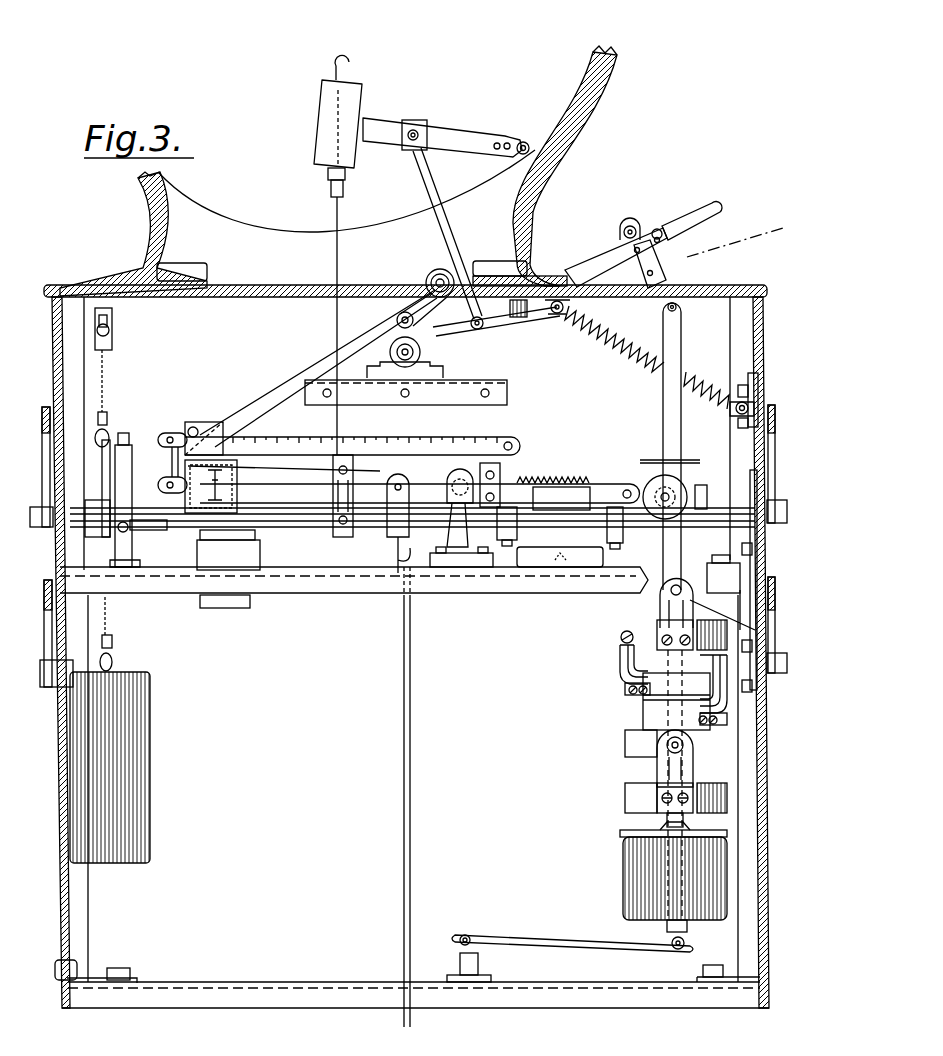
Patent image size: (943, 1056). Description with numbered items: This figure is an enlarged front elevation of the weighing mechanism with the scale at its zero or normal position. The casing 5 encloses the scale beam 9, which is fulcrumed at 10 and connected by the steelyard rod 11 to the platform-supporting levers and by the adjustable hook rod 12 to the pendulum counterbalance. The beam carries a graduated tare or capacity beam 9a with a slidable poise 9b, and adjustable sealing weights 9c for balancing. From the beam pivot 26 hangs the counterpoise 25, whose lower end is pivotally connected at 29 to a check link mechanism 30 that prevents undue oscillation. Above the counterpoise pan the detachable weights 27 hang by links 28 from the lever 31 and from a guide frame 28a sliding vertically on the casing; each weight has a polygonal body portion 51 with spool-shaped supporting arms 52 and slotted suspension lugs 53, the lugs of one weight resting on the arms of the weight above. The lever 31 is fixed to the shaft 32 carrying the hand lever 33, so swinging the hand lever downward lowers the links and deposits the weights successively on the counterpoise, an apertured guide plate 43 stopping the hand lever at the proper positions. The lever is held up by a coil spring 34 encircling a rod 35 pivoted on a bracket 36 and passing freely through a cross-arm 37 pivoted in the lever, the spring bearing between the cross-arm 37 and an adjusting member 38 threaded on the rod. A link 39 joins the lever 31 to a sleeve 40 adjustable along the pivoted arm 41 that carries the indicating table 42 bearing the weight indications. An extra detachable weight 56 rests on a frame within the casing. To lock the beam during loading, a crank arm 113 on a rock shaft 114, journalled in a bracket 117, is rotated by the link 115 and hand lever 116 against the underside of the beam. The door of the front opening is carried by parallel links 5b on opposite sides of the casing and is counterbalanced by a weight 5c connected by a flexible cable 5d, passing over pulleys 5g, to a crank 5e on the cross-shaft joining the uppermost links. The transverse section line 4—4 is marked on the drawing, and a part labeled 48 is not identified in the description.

The handle / base frame 4 is at (720, 206).
The casing 5 is at (770, 866).
The parallel links 5b is at (768, 445).
The counterbalance weight 5c is at (150, 773).
The flexible cable 5d is at (108, 620).
The crank 5e is at (100, 470).
The pulleys 5g is at (109, 333).
The scale beam 9 is at (522, 468).
The graduated tare or capacity beam 9a is at (250, 437).
The slidable poise 9b is at (190, 422).
The adjustable sealing weight 9c is at (565, 473).
The fulcrum 10 is at (448, 508).
The steelyard rod 11 is at (411, 846).
The adjustable hook rod 12 is at (338, 226).
The hanging counterpoise 25 is at (628, 858).
The beam pivot 26 is at (655, 482).
The detachable weights 27 is at (626, 744).
The links 28 is at (682, 422).
The guide frame 28a is at (726, 600).
The pivotal connection 29 is at (686, 943).
The check link mechanism 30 is at (522, 940).
The lever 31 is at (532, 318).
The shaft 32 is at (390, 360).
The hand lever 33 is at (578, 272).
The coil spring 34 is at (615, 344).
The rod 35 is at (700, 386).
The bracket 36 is at (748, 416).
The cross-arm 37 is at (557, 320).
The adjusting member 38 is at (732, 395).
The link 39 is at (452, 232).
The sleeve 40 is at (420, 120).
The pivoted arm 41 is at (470, 140).
The indicating table 42 is at (318, 118).
The guide plate 43 is at (655, 262).
The fork 48 is at (386, 494).
The body portion 51 is at (626, 795).
The spool-shaped supporting arms 52 is at (620, 636).
The slotted suspension lugs 53 is at (622, 658).
The extra detachable weight 56 is at (556, 556).
The crank arm 113 is at (148, 528).
The rock shaft 114 is at (128, 532).
The link 115 is at (285, 364).
The hand lever 116 is at (435, 272).
The bracket 117 is at (124, 475).